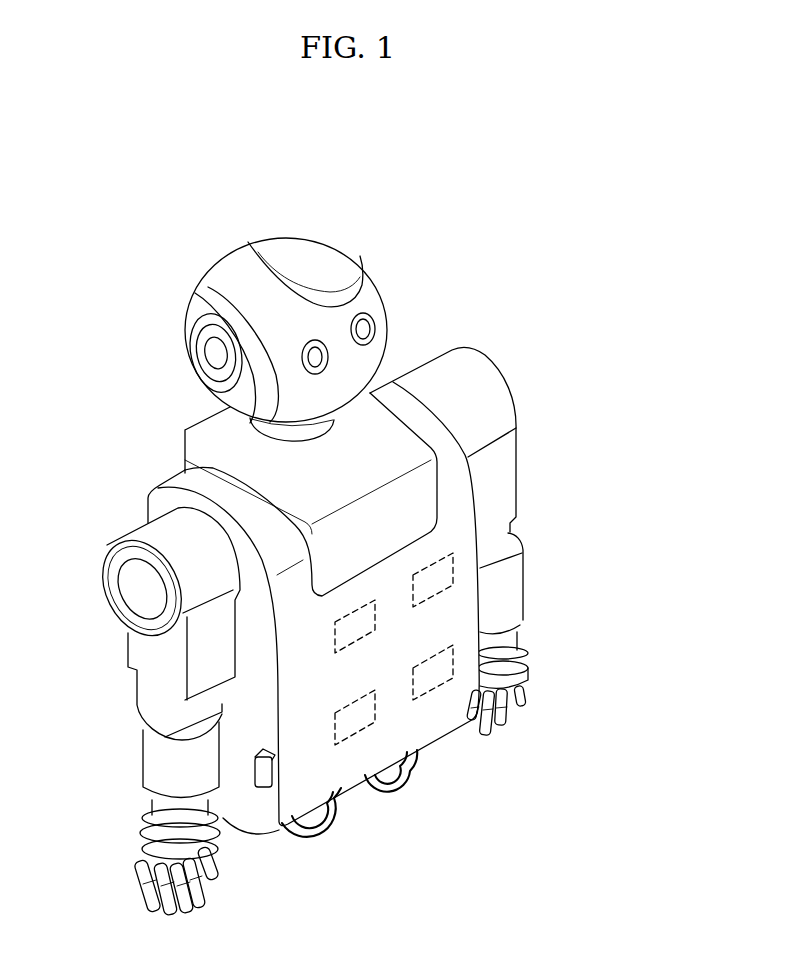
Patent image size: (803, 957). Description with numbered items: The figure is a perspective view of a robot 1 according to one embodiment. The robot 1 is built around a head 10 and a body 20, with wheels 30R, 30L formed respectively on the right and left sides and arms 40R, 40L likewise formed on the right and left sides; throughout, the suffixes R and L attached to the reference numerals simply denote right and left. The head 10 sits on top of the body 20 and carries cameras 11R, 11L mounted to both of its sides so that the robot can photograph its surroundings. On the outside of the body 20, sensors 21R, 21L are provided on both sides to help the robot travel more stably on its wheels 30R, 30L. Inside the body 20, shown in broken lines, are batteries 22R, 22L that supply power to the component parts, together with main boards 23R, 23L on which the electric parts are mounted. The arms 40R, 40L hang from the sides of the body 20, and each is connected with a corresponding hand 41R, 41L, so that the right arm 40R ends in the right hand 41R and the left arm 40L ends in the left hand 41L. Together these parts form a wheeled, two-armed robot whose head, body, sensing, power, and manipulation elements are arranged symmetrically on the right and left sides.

The robot 1 is at (412, 205).
The head 10 is at (184, 294).
The right camera 11R is at (312, 358).
The left camera 11L is at (363, 329).
The body 20 is at (250, 673).
The right sensor 21R is at (262, 787).
The left sensor 21L is at (485, 657).
The right battery 22R is at (357, 611).
The left battery 22L is at (441, 562).
The right main board 23R is at (355, 703).
The left main board 23L is at (433, 657).
The right wheel 30R is at (341, 815).
The left wheel 30L is at (413, 782).
The right arm 40R is at (128, 722).
The left arm 40L is at (539, 450).
The right hand 41R is at (140, 862).
The left hand 41L is at (522, 693).